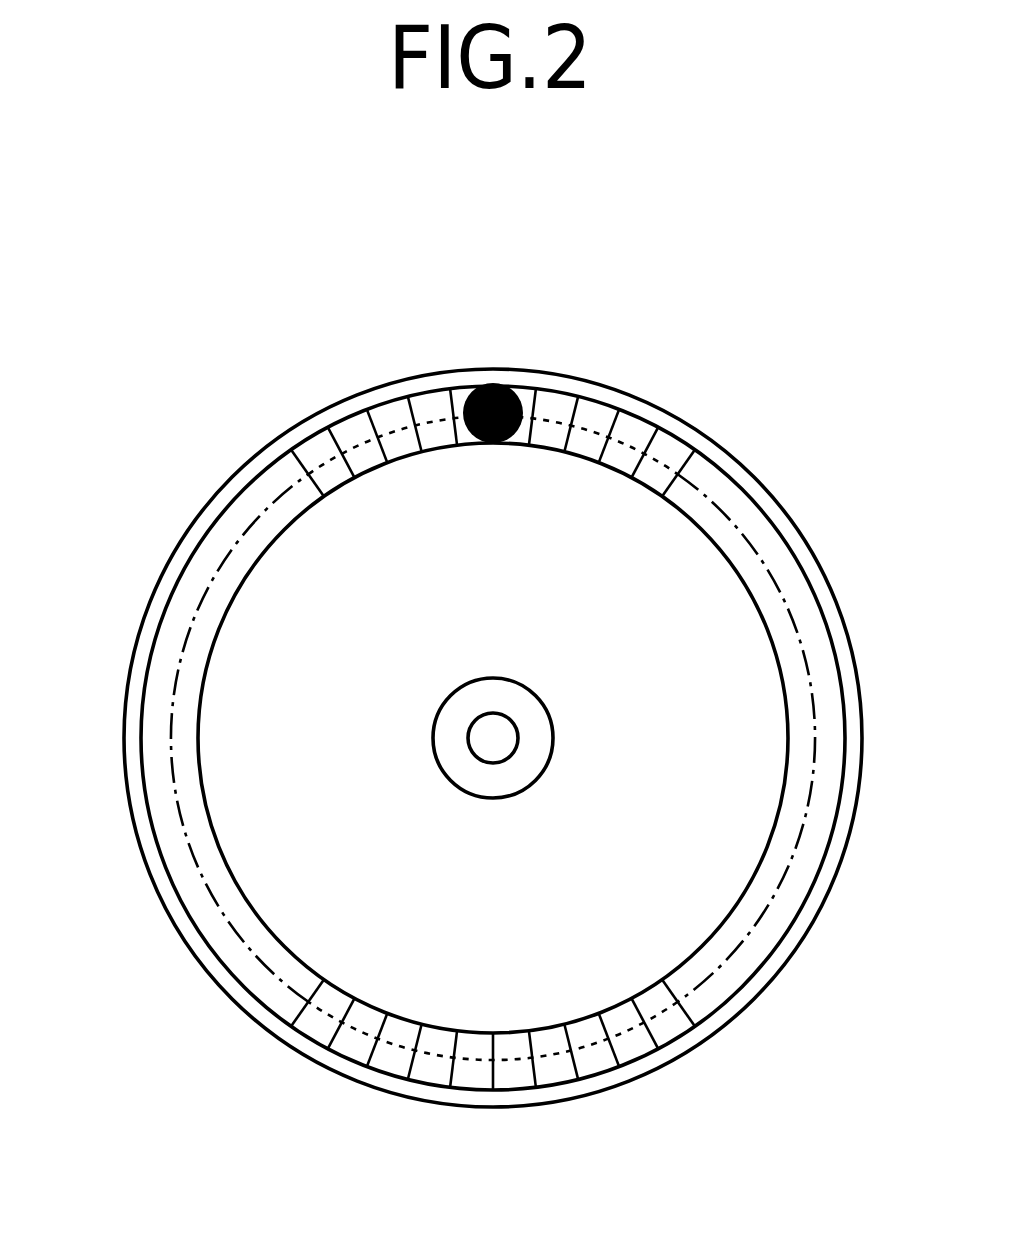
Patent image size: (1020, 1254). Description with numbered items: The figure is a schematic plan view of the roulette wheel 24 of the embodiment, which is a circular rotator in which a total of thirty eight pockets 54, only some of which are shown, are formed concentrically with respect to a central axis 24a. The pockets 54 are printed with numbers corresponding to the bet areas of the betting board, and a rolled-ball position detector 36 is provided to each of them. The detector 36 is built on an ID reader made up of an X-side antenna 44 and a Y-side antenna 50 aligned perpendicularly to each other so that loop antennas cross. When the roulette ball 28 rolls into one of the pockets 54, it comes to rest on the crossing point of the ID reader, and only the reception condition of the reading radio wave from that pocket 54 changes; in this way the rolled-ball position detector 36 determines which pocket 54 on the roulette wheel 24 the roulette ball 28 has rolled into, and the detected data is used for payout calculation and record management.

The roulette wheel 24 is at (124, 556).
The central axis 24a is at (471, 716).
The roulette ball 28 is at (524, 447).
The rolled-ball position detector 36 is at (302, 1040).
The X-side antenna 44 is at (443, 1032).
The Y-side antenna 50 is at (546, 1050).
The pockets 54 is at (307, 450).